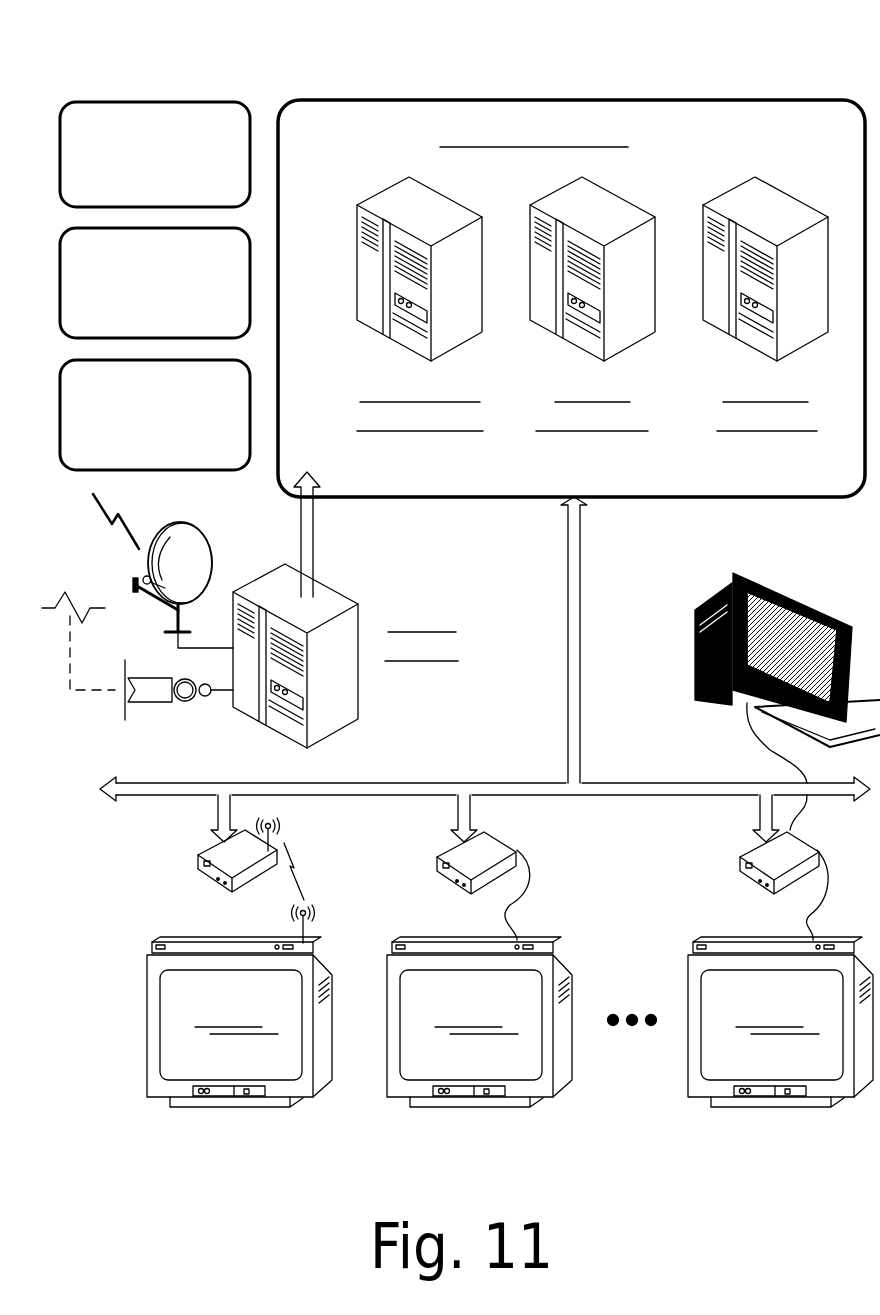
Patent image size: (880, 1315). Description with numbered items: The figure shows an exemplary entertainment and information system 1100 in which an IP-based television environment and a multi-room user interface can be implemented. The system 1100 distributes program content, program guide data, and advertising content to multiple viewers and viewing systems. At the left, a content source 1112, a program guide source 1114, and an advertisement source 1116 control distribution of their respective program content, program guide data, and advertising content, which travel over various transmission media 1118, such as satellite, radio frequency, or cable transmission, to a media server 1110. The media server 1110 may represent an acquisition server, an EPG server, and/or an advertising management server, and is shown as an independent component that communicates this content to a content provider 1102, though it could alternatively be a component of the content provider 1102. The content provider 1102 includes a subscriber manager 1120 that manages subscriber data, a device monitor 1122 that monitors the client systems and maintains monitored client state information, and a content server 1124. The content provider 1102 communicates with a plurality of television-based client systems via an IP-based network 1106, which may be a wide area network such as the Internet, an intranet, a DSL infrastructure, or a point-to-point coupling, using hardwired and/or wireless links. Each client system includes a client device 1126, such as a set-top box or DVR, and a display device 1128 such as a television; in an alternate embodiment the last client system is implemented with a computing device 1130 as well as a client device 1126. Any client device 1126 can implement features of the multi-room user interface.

The entertainment and information system 1100 is at (681, 62).
The content provider 1102 is at (703, 147).
The IP-based network 1106 is at (392, 783).
The media server 1110 is at (450, 691).
The content source 1112 is at (180, 184).
The program guide source 1114 is at (180, 321).
The advertisement source 1116 is at (180, 452).
The transmission media 1118 is at (157, 735).
The subscriber manager 1120 is at (447, 459).
The device monitor 1122 is at (619, 459).
The content server 1124 is at (792, 459).
The client device 1126 is at (182, 940).
The display device 1128 is at (162, 1008).
The computing device 1130 is at (715, 597).